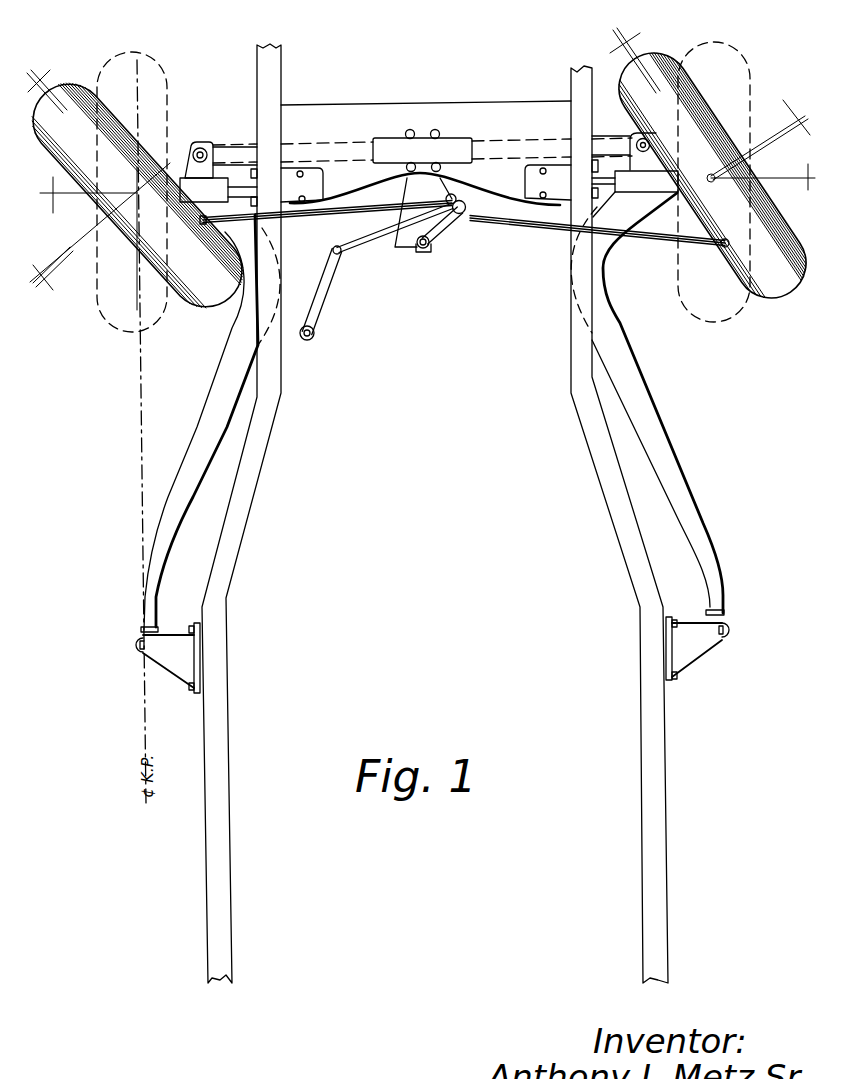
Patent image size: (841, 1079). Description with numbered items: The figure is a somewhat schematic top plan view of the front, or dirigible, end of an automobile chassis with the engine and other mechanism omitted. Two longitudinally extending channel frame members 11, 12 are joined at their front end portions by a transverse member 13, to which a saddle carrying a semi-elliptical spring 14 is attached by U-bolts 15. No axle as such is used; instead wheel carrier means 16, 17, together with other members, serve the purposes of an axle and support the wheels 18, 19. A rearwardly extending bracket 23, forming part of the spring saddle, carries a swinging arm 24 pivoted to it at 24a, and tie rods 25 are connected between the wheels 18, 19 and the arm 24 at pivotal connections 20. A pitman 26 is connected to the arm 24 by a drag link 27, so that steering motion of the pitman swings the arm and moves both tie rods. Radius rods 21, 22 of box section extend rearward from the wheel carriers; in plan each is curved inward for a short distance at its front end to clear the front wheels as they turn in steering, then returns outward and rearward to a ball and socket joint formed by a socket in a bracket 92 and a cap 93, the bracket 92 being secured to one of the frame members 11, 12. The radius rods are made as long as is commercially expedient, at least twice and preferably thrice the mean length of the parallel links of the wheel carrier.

The channel frame member 11 is at (243, 522).
The channel frame member 12 is at (613, 510).
The transverse member 13 is at (330, 104).
The semi-elliptical spring 14 is at (233, 146).
The U-bolts 15 is at (436, 130).
The wheel carrier means 16 is at (313, 190).
The wheel carrier means 17 is at (527, 175).
The wheel 18 is at (197, 295).
The wheel 19 is at (648, 90).
The pivotal connection 20 is at (463, 197).
The radius rod 21 is at (200, 427).
The radius rod 22 is at (653, 413).
The bracket 23 is at (423, 188).
The swinging arm 24 is at (445, 225).
The pivot 24a is at (428, 250).
The tie rods 25 is at (312, 218).
The pitman 26 is at (322, 307).
The drag link 27 is at (397, 237).
The bracket 92 is at (177, 660).
The cap 93 is at (136, 647).